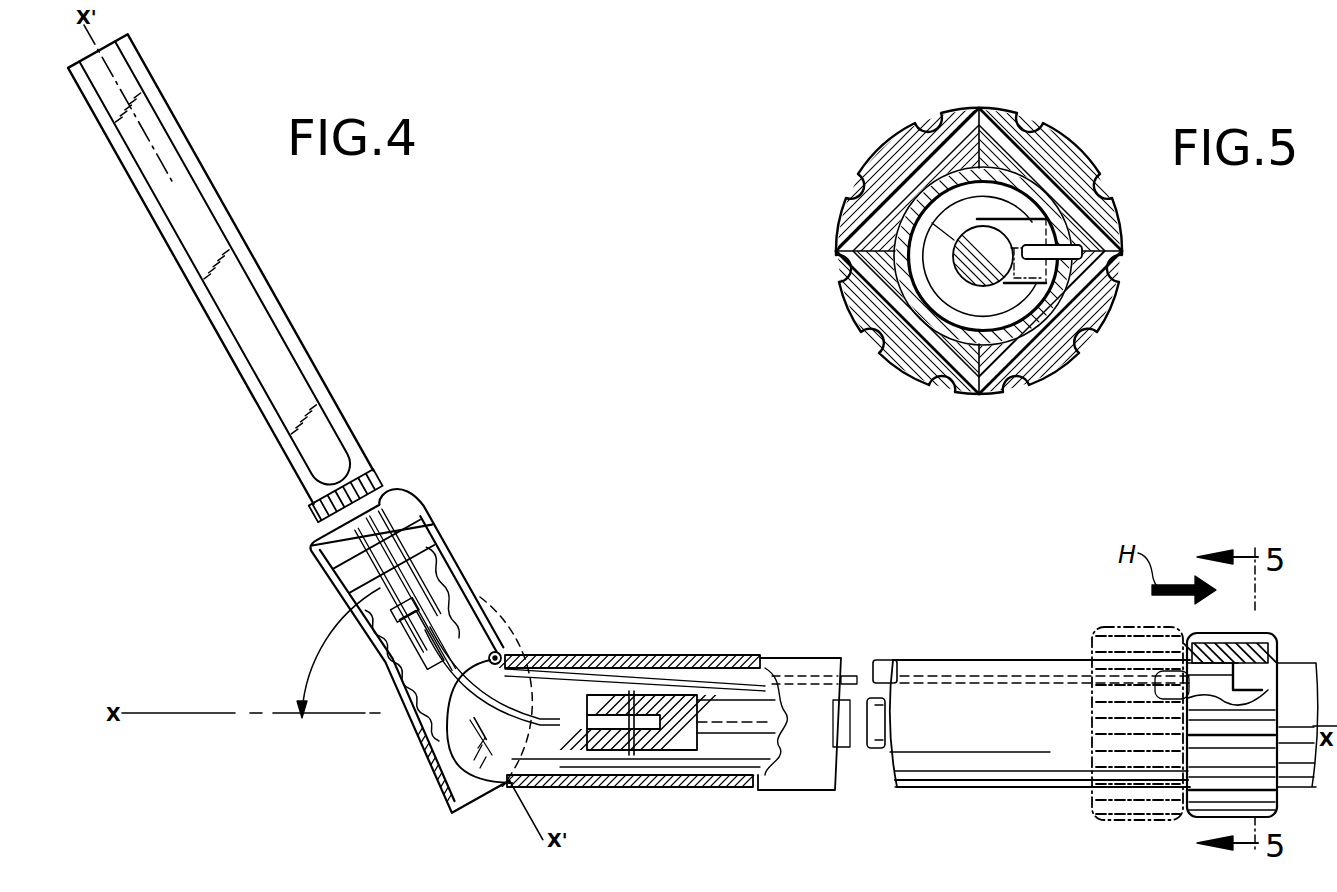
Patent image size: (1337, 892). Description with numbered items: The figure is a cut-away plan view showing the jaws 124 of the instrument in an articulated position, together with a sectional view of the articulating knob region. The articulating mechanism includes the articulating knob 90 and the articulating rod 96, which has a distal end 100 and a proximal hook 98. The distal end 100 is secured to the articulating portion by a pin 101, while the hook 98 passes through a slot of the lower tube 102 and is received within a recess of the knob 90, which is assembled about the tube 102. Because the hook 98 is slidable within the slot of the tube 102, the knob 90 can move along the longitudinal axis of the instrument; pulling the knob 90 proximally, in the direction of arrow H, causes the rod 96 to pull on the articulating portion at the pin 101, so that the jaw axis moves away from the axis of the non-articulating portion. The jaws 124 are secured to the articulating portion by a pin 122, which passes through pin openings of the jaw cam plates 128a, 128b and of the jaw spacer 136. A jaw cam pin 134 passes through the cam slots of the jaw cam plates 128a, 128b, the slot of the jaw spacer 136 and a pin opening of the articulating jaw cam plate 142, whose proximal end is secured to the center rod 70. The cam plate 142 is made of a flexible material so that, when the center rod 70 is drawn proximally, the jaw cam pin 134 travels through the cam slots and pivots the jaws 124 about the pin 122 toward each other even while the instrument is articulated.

In FIG. 4, the center rod 70 is at (878, 752).
In FIG. 5, the center rod 70 is at (905, 165).
In FIG. 4, the articulating knob 90 is at (1183, 818).
In FIG. 5, the articulating knob 90 is at (1040, 150).
In FIG. 4, the articulating rod 96 is at (875, 655).
In FIG. 4, the proximal hook 98 is at (1250, 645).
In FIG. 5, the proximal hook 98 is at (1120, 248).
In FIG. 4, the distal end 100 is at (515, 660).
In FIG. 4, the pin 101 is at (500, 652).
In FIG. 4, the lower tube 102 is at (991, 660).
In FIG. 5, the lower tube 102 is at (950, 328).
In FIG. 4, the pin 122 is at (420, 505).
In FIG. 4, the jaws 124 is at (205, 236).
In FIG. 4, the jaw cam plate 128a is at (385, 492).
In FIG. 4, the jaw cam plate 128b is at (306, 541).
In FIG. 4, the jaw cam pin 134 is at (482, 597).
In FIG. 4, the jaw spacer 136 is at (458, 578).
In FIG. 4, the articulating jaw cam plate 142 is at (412, 765).